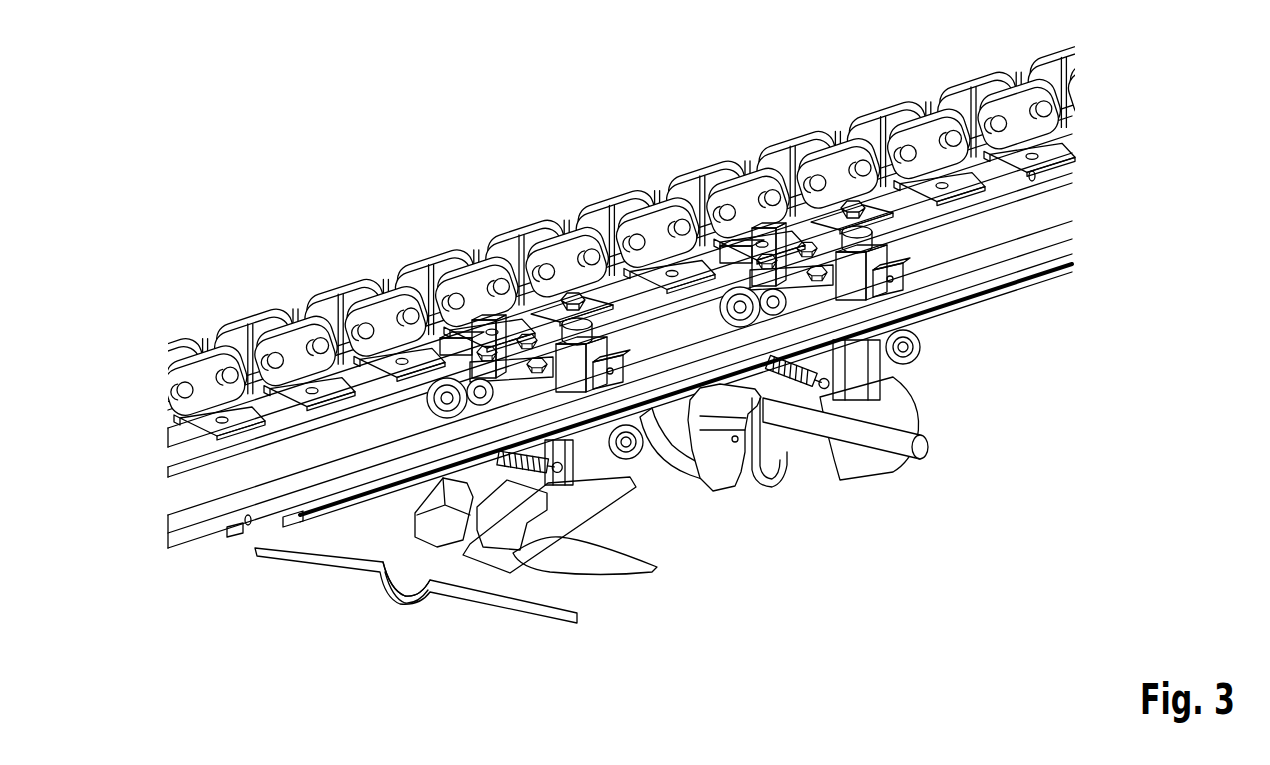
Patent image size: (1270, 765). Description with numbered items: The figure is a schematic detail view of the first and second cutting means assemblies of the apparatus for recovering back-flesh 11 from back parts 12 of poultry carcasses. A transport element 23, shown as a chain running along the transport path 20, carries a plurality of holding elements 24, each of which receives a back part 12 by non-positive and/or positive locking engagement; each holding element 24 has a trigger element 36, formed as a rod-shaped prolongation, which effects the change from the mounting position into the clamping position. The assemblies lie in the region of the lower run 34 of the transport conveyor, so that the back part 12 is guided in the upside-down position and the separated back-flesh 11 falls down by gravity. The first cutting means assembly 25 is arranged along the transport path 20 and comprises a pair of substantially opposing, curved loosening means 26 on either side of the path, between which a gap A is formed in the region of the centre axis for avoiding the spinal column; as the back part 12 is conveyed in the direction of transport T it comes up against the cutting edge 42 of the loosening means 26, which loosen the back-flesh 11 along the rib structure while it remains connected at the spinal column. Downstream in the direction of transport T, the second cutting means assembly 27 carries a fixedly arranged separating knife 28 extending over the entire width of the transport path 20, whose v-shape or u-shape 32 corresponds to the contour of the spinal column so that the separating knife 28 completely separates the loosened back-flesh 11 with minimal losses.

The back-flesh 11 is at (610, 555).
The back part 12 is at (853, 457).
The transport path 20 is at (1000, 273).
The transport element 23 is at (873, 132).
The holding element 24 is at (798, 262).
The first cutting means assembly 25 is at (806, 492).
The loosening means 26 is at (690, 460).
The second cutting means assembly 27 is at (303, 580).
The separating knife 28 is at (465, 587).
The v-shape or u-shape 32 is at (408, 597).
The lower run 34 is at (202, 572).
The trigger element 36 is at (468, 413).
The cutting edge 42 is at (718, 480).
The gap A is at (437, 530).
The direction of transport T is at (1068, 518).